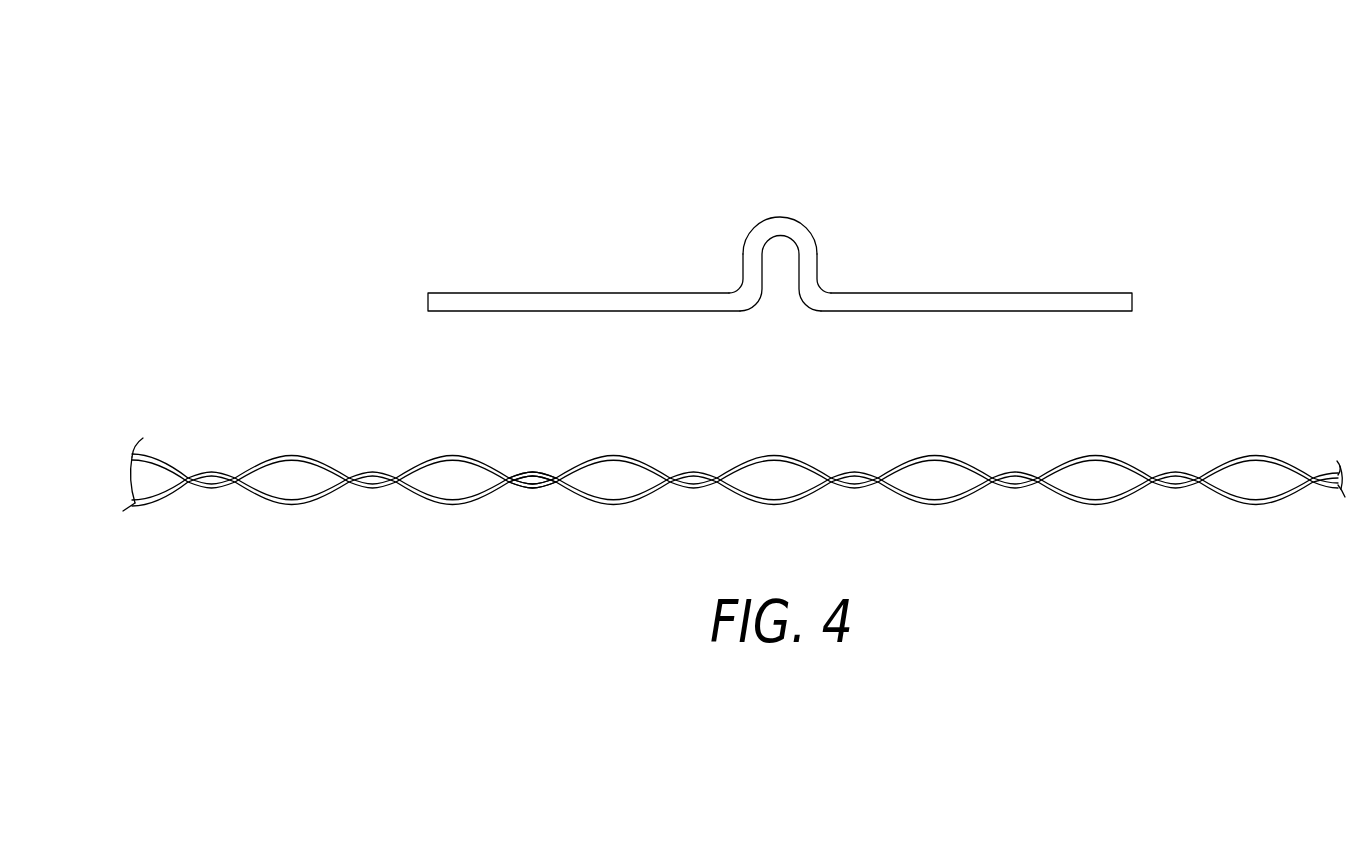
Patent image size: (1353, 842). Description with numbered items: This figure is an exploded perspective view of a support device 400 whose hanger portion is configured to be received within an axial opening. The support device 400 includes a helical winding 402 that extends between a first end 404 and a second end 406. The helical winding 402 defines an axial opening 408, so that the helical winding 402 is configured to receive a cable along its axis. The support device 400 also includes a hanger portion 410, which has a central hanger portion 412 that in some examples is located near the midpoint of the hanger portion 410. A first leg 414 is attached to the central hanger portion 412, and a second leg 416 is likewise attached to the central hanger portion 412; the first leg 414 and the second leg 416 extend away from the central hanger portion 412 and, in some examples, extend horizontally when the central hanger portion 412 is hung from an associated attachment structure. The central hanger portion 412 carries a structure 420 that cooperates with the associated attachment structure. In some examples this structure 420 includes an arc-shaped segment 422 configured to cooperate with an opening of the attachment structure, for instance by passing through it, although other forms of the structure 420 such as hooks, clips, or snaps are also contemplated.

The support device 400 is at (535, 133).
The helical winding 402 is at (450, 455).
The first end 404 is at (170, 440).
The second end 406 is at (1272, 440).
The axial opening 408 is at (530, 493).
The hanger portion 410 is at (693, 292).
The central hanger portion 412 is at (797, 202).
The first leg 414 is at (449, 292).
The second leg 416 is at (983, 292).
The structure 420 is at (825, 217).
The arc-shaped segment 422 is at (778, 215).